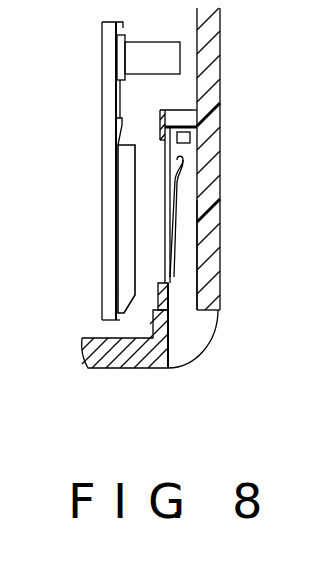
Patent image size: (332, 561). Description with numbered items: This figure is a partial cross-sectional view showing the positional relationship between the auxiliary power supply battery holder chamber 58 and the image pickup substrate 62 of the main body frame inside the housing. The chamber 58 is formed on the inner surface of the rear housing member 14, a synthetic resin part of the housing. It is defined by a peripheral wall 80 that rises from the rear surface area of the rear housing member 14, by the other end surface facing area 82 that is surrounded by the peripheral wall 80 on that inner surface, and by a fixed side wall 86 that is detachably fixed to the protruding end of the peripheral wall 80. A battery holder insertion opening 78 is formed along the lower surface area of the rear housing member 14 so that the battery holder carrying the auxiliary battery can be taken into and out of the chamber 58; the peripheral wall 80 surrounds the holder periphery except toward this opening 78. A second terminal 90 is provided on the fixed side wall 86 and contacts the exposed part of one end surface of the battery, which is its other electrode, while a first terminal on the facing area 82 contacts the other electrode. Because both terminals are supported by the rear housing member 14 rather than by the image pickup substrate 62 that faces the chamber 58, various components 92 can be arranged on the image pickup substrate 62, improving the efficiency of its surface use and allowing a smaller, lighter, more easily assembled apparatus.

The rear housing member 14 is at (222, 47).
The auxiliary power supply battery holder chamber 58 is at (158, 190).
The image pickup substrate 62 is at (100, 100).
The battery holder insertion opening 78 is at (185, 328).
The peripheral wall 80 is at (183, 108).
The other end surface facing area 82 is at (190, 242).
The fixed side wall 86 is at (160, 128).
The second terminal 90 is at (180, 187).
The various components 92 is at (118, 263).